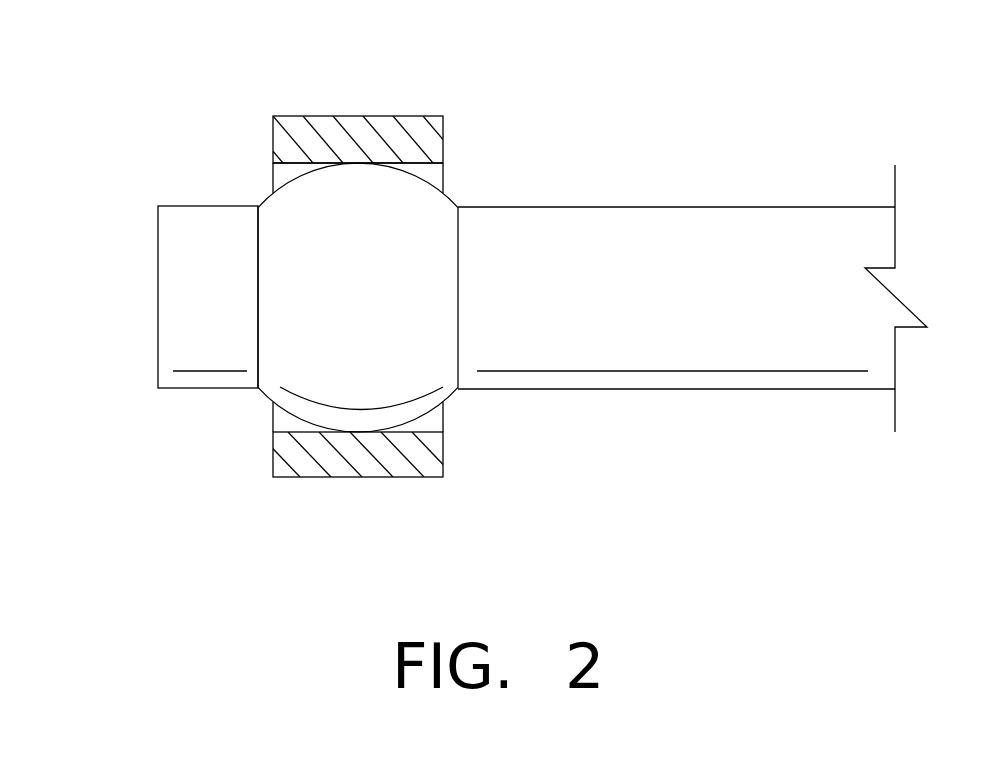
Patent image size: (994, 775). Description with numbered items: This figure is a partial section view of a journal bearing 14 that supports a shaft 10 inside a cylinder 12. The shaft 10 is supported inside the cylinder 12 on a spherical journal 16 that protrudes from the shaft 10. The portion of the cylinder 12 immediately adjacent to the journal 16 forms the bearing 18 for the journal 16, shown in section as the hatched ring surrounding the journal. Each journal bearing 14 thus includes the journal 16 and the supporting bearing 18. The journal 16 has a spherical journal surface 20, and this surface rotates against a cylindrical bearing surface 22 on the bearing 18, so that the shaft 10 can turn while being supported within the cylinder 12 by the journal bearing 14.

The shaft 10 is at (668, 222).
The cylinder 12 is at (273, 140).
The journal bearing 14 is at (108, 138).
The spherical journal 16 is at (432, 316).
The bearing 18 is at (350, 116).
The spherical journal surface 20 is at (377, 302).
The cylindrical bearing surface 22 is at (417, 163).